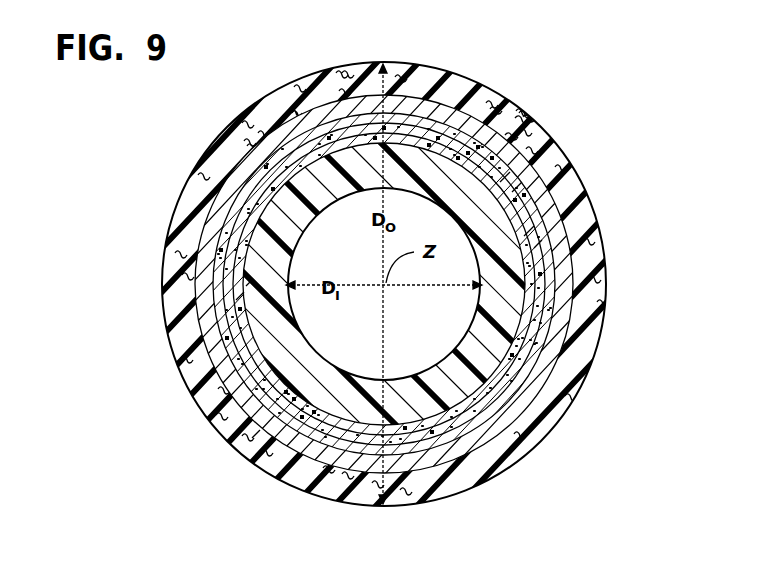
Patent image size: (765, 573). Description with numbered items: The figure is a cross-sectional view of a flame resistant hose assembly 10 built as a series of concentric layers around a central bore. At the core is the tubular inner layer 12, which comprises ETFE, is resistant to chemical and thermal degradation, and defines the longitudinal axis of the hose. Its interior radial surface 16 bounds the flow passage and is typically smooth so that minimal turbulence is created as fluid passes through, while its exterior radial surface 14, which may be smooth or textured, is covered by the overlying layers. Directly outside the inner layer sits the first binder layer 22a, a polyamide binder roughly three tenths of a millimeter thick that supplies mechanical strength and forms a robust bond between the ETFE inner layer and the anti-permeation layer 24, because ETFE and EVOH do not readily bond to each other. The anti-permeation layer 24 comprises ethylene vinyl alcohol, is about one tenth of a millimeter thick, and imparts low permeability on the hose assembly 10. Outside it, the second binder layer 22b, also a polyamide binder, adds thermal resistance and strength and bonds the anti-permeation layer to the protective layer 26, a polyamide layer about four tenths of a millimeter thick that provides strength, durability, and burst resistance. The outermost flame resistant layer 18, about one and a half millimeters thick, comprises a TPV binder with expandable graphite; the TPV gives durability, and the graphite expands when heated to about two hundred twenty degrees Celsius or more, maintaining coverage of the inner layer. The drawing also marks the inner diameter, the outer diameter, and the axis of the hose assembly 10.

The hose assembly 10 is at (150, 172).
The tubular inner layer 12 is at (293, 452).
The exterior radial surface 14 is at (237, 289).
The interior radial surface 16 is at (335, 364).
The flame resistant layer 18 is at (323, 483).
The first binder layer 22a is at (505, 180).
The second binder layer 22b is at (532, 236).
The anti-permeation layer 24 is at (525, 122).
The protective layer 26 is at (535, 388).